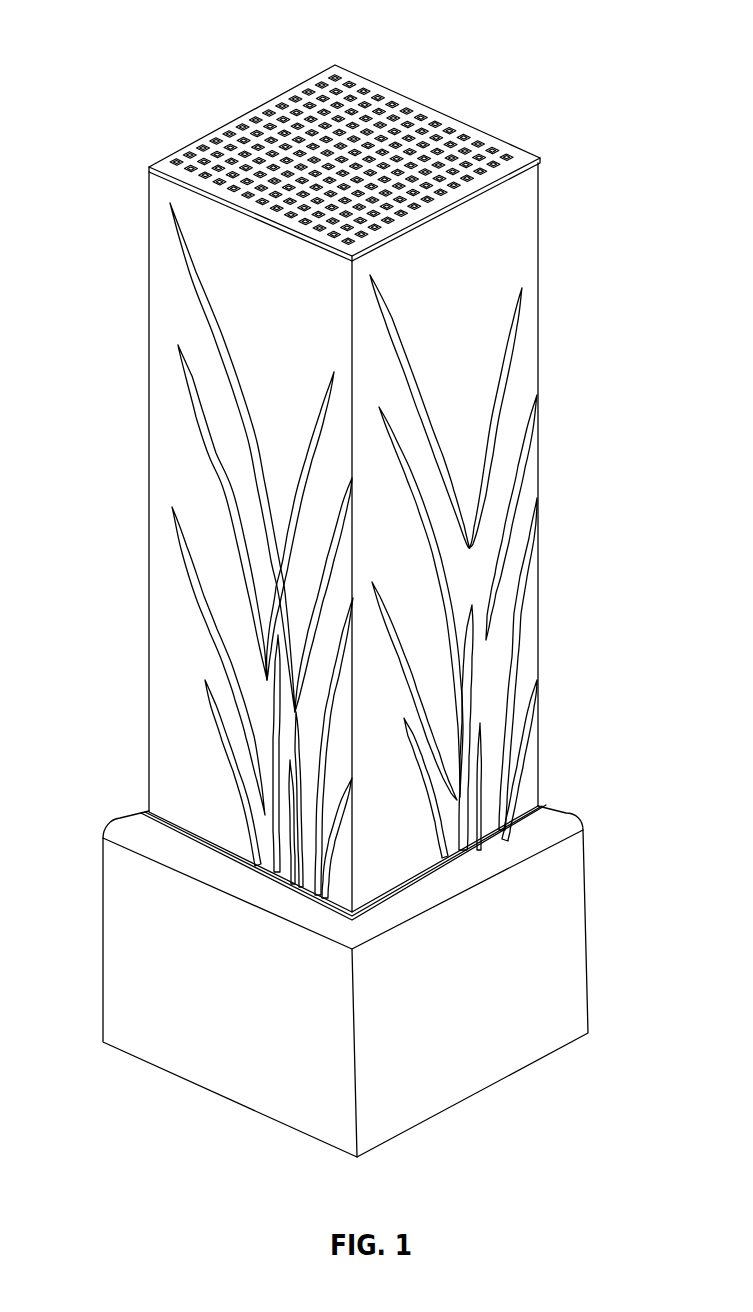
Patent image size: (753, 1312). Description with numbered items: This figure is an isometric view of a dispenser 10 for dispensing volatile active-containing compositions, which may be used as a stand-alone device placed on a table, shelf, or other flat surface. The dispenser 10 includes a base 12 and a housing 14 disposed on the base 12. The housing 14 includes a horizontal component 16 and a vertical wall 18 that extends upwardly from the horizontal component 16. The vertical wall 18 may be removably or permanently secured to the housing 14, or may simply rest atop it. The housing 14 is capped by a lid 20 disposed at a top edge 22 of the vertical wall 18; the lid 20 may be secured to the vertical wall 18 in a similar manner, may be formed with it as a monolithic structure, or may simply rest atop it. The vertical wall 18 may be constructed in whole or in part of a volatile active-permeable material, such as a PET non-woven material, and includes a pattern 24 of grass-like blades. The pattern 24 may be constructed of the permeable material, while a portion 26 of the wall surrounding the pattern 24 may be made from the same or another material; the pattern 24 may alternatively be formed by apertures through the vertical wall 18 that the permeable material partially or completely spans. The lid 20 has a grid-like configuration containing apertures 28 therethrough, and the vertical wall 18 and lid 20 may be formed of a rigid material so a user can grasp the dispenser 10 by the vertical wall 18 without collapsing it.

The dispenser 10 is at (128, 42).
The base 12 is at (476, 1114).
The housing 14 is at (590, 913).
The horizontal component 16 is at (572, 814).
The vertical wall 18 is at (541, 543).
The lid 20 is at (508, 147).
The top edge 22 is at (546, 159).
The pattern 24 is at (512, 658).
The portion 26 is at (523, 378).
The apertures 28 is at (427, 113).